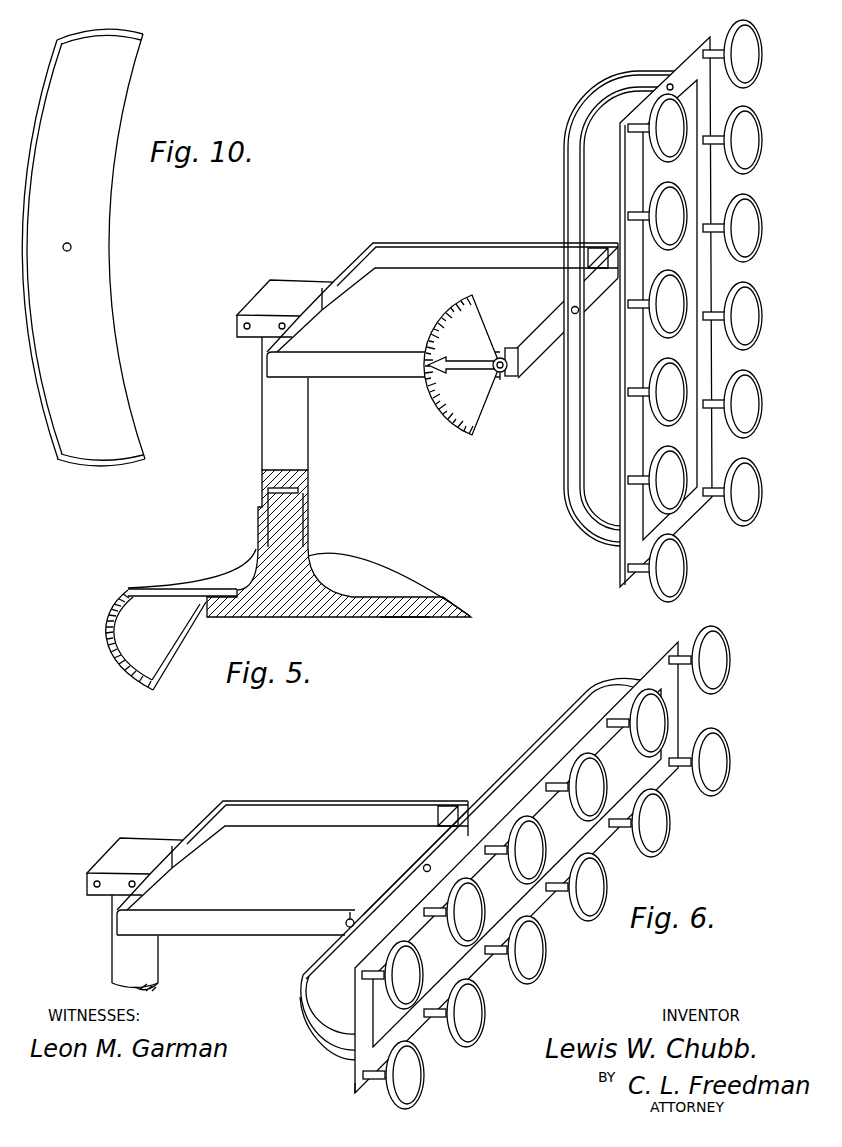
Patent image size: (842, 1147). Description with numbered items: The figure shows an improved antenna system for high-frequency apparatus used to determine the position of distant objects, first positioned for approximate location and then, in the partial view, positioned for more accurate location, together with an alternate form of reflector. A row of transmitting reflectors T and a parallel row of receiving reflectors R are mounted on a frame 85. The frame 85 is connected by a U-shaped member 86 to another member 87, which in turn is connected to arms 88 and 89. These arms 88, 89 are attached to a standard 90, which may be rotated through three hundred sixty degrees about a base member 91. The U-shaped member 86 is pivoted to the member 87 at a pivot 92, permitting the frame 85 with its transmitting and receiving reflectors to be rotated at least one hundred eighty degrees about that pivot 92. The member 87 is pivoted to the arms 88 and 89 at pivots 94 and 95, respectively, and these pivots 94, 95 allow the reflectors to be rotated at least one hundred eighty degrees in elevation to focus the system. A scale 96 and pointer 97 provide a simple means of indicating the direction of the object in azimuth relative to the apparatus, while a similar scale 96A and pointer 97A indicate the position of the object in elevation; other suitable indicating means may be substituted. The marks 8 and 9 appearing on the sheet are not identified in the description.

In FIG. 5, the frame 85 is at (632, 466).
In FIG. 6, the frame 85 is at (646, 676).
In FIG. 5, the U-shaped member 86 is at (566, 433).
In FIG. 6, the U-shaped member 86 is at (528, 750).
In FIG. 5, the member 87 is at (556, 310).
In FIG. 6, the member 87 is at (387, 891).
In FIG. 5, the arm 88 is at (470, 243).
In FIG. 6, the arm 88 is at (277, 843).
In FIG. 5, the arm 89 is at (423, 353).
In FIG. 6, the arm 89 is at (236, 912).
In FIG. 5, the standard 90 is at (261, 432).
In FIG. 6, the standard 90 is at (152, 943).
In FIG. 5, the base member 91 is at (374, 577).
In FIG. 10, the pivot 92 is at (71, 246).
In FIG. 5, the pivot 92 is at (578, 312).
In FIG. 6, the pivot 92 is at (423, 868).
In FIG. 5, the pivot 94 is at (600, 252).
In FIG. 6, the pivot 94 is at (448, 803).
In FIG. 5, the pivot 95 is at (503, 373).
In FIG. 6, the pivot 95 is at (350, 919).
In FIG. 5, the scale 96 is at (100, 625).
In FIG. 5, the scale 96A is at (440, 410).
In FIG. 5, the pointer 97 is at (130, 590).
In FIG. 5, the pointer 97A is at (466, 360).
In FIG. 5, the receiving reflectors R is at (669, 182).
In FIG. 6, the receiving reflectors R is at (546, 935).
In FIG. 5, the transmitting reflectors T is at (750, 107).
In FIG. 6, the transmitting reflectors T is at (583, 822).
In FIG. 5, the base plate 8 is at (405, 628).
In FIG. 6, the panel end 9 is at (368, 1094).